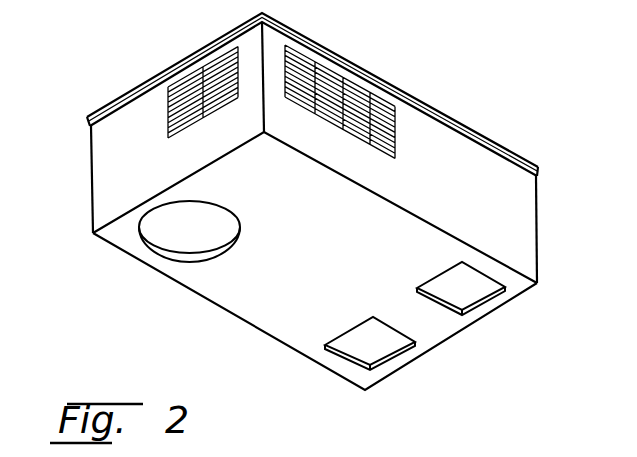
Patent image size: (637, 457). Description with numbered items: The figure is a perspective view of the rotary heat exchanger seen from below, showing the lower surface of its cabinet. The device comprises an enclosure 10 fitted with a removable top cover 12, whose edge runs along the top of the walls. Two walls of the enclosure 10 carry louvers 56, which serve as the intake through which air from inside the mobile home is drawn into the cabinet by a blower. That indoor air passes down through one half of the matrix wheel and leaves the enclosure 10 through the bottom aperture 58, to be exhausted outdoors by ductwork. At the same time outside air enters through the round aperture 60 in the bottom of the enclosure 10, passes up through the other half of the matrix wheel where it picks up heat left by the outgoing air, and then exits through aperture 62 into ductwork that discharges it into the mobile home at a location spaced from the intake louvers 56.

The enclosure 10 is at (91, 152).
The removable top cover 12 is at (193, 52).
The louvers 56 is at (168, 108).
The bottom aperture 58 is at (483, 305).
The aperture 60 is at (165, 256).
The aperture 62 is at (348, 357).